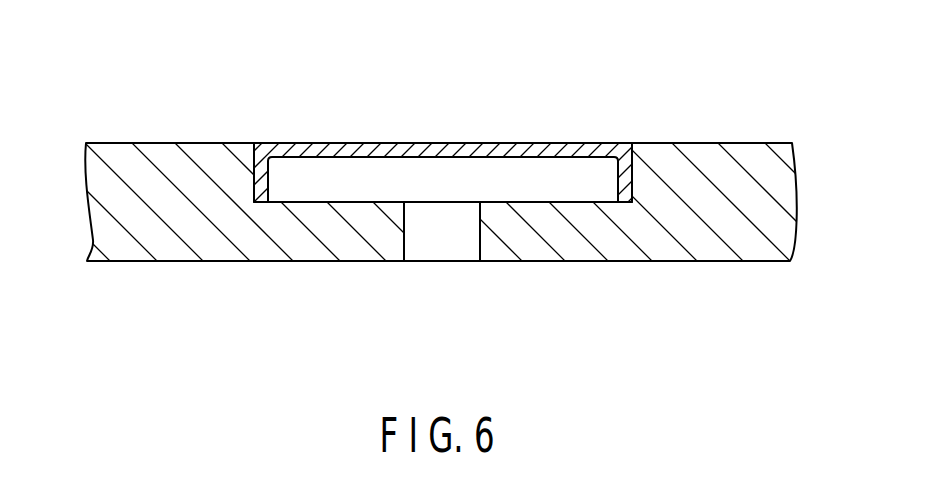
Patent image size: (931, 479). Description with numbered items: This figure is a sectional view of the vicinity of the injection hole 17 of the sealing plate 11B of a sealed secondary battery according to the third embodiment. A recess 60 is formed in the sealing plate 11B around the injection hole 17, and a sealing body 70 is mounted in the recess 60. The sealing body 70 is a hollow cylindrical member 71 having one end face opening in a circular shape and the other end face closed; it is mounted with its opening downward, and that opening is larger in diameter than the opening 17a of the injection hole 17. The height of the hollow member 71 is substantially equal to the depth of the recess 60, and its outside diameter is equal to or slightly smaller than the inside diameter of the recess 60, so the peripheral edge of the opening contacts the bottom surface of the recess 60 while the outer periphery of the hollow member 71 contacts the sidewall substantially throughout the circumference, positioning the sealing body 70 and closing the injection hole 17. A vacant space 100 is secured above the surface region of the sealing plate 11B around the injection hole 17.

The sealing plate 11B is at (707, 143).
The recess 60 is at (254, 179).
The injection hole 17 is at (443, 253).
The opening 17a is at (442, 201).
The vacant space 100 is at (387, 202).
The sealing body 70 is at (445, 122).
The hollow cylindrical member 71 is at (596, 143).